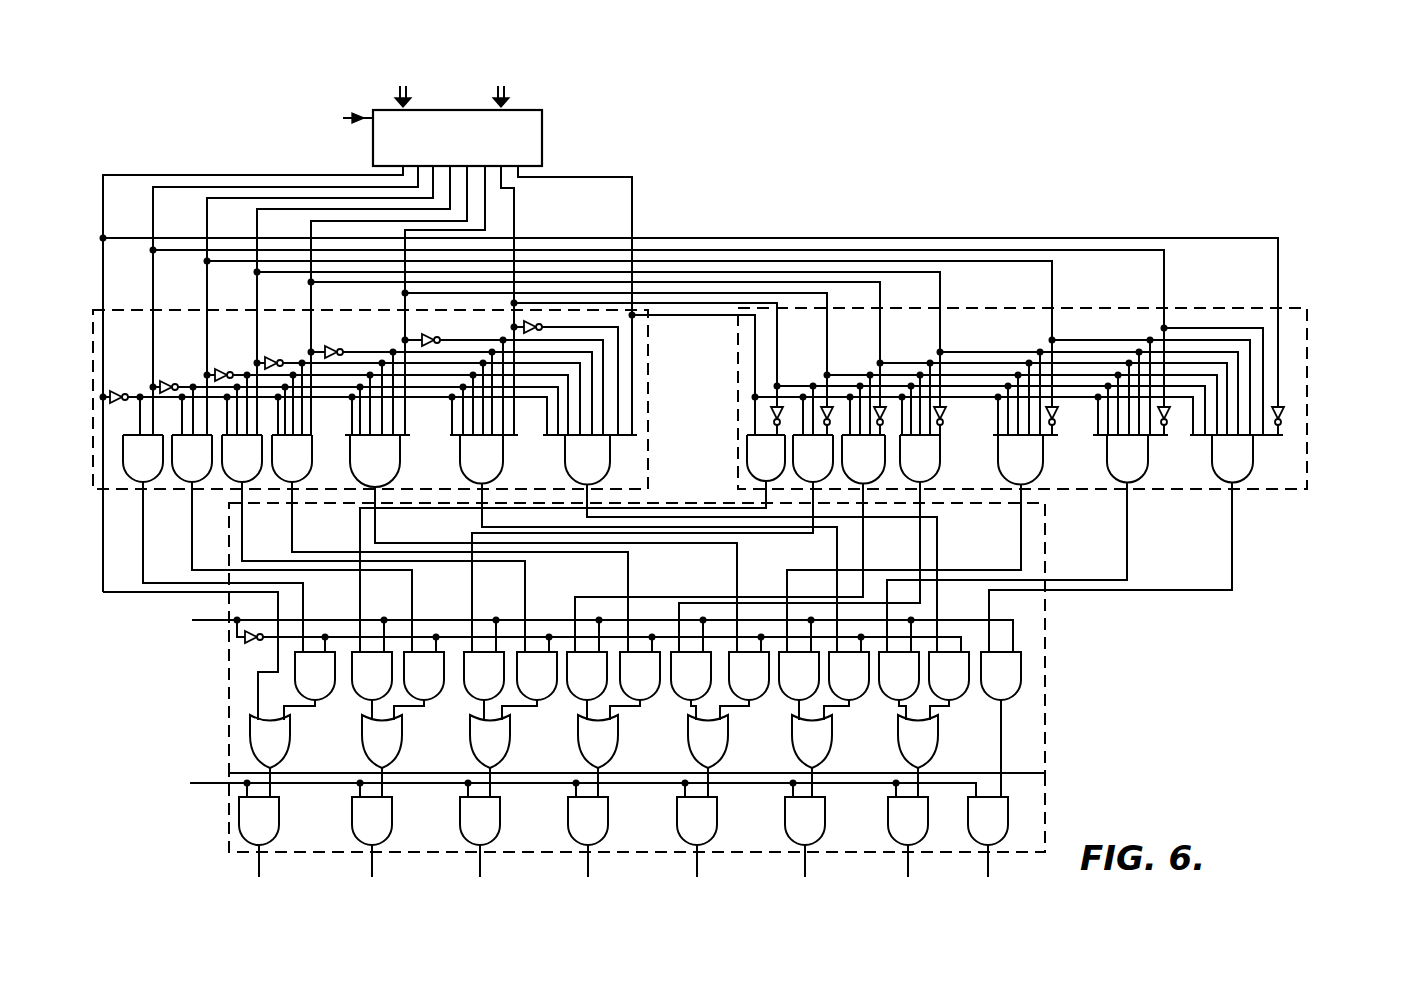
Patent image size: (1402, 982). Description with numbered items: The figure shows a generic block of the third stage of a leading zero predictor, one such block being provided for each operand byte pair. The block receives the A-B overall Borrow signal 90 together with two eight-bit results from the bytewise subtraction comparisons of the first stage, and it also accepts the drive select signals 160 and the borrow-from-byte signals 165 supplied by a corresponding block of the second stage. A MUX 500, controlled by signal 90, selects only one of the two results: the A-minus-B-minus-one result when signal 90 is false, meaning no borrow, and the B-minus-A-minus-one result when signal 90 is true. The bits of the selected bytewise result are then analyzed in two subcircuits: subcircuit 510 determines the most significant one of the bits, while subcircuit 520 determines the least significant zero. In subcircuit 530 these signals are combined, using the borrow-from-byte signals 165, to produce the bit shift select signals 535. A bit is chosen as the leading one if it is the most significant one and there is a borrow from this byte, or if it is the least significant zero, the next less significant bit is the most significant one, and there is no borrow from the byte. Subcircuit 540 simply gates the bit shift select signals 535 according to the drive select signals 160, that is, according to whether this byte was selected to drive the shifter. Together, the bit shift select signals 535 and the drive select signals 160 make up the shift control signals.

The MUX 500 is at (545, 122).
The subcircuit 510 is at (649, 362).
The subcircuit 520 is at (1308, 364).
The subcircuit 530 is at (1046, 637).
The subcircuit 540 is at (1046, 815).
The bit shift select signals 535 is at (372, 874).
The A-B overall Borrow signal 90 is at (358, 124).
The signal 165 is at (230, 622).
The drive select signals 160 is at (228, 785).